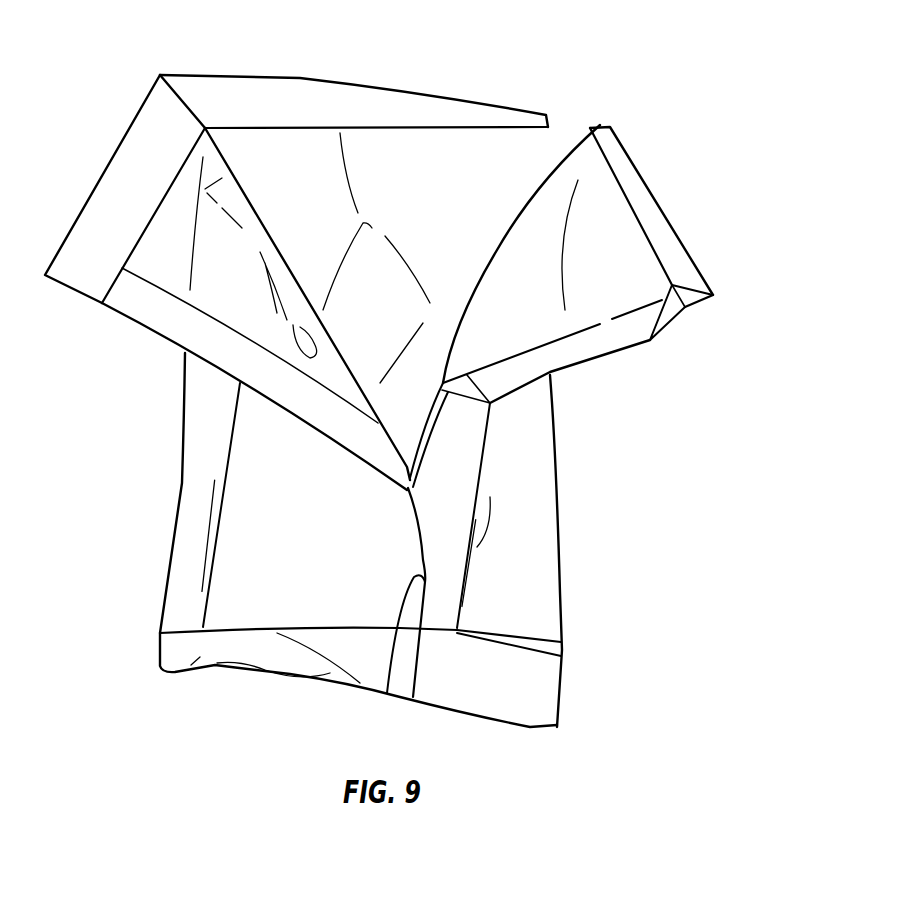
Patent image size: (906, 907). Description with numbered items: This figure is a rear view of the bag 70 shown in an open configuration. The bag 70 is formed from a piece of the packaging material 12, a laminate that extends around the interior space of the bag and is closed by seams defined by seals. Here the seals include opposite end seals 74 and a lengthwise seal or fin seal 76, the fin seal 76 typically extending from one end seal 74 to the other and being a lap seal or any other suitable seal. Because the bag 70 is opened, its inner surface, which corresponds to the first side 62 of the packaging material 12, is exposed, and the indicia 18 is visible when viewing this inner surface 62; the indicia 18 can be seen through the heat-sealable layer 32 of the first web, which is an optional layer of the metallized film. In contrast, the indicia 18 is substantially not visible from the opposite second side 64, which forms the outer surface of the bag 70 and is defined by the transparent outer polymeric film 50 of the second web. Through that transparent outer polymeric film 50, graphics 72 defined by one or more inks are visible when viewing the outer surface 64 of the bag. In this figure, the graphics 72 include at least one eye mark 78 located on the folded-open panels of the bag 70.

The bag 70 is at (124, 44).
The first side 62 is at (117, 198).
The indicia 18 is at (503, 175).
The heat-sealable layer 32 is at (240, 296).
The outer polymeric film 50 is at (667, 322).
The packaging material 12 is at (122, 467).
The graphics 72 is at (186, 536).
The eye mark 78 is at (683, 307).
The second side 64 is at (188, 621).
The end seals 74 is at (191, 665).
The fin seal 76 is at (387, 693).